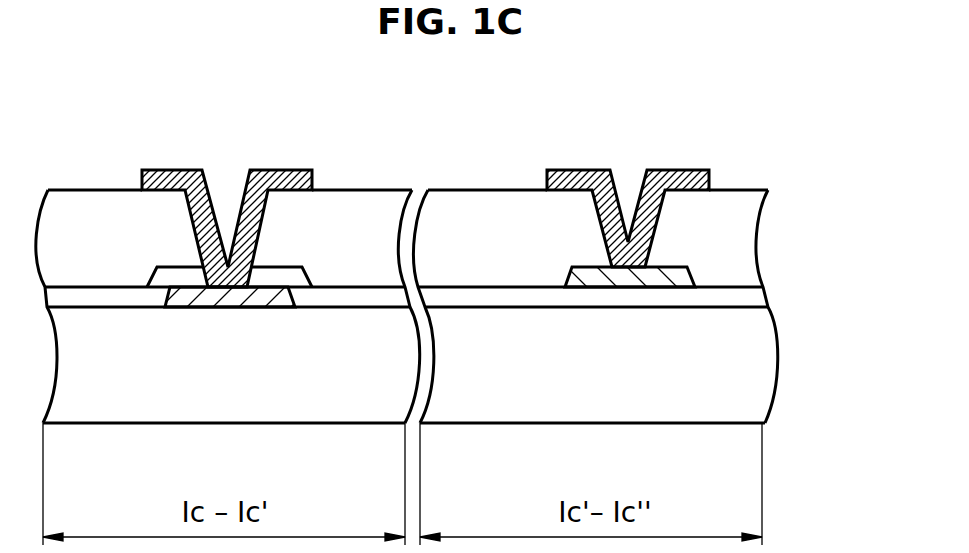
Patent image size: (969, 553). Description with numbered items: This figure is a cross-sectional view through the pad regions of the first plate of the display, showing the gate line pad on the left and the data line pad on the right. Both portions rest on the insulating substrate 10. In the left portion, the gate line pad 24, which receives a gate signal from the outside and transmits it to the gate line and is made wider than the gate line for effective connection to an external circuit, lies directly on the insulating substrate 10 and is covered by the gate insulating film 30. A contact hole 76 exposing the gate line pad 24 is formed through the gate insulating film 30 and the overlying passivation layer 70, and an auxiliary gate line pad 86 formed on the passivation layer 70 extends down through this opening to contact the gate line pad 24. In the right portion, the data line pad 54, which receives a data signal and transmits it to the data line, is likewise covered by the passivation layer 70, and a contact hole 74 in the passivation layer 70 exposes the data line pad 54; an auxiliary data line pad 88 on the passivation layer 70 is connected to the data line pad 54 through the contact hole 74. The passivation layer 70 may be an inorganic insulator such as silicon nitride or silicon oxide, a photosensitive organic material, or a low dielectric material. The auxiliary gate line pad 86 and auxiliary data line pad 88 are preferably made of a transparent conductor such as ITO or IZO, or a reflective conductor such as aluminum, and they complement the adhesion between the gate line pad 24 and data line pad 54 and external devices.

The insulating substrate 10 is at (80, 390).
The gate line pad 24 is at (174, 296).
The gate insulating film 30 is at (352, 294).
The data line pad 54 is at (620, 283).
The passivation layer 70 is at (82, 210).
The contact hole 74 is at (628, 174).
The contact hole 76 is at (226, 188).
The auxiliary gate line pad 86 is at (285, 178).
The auxiliary data line pad 88 is at (681, 176).